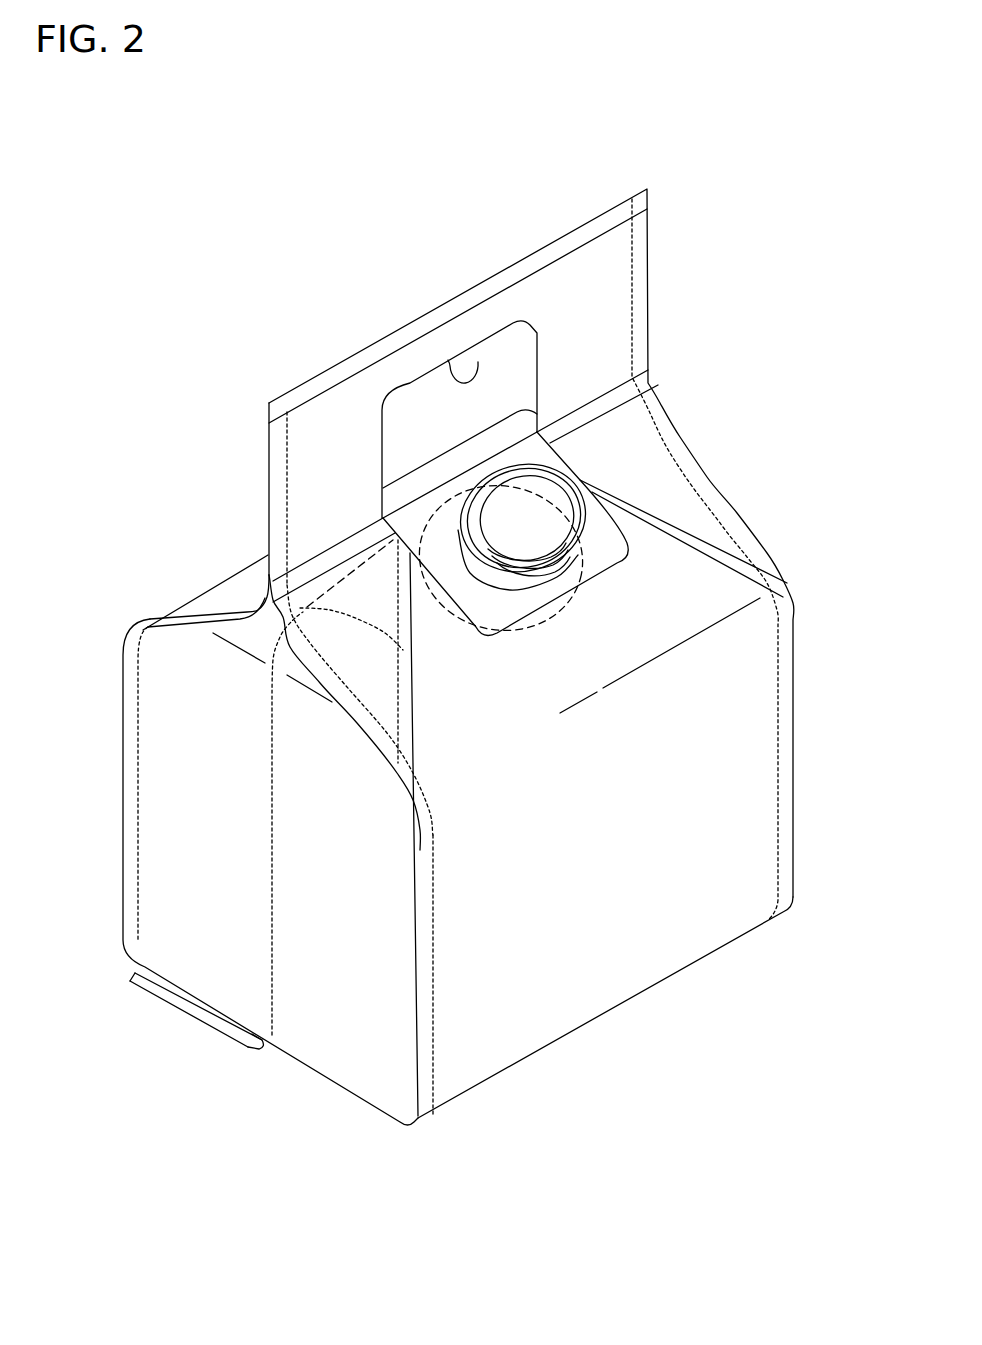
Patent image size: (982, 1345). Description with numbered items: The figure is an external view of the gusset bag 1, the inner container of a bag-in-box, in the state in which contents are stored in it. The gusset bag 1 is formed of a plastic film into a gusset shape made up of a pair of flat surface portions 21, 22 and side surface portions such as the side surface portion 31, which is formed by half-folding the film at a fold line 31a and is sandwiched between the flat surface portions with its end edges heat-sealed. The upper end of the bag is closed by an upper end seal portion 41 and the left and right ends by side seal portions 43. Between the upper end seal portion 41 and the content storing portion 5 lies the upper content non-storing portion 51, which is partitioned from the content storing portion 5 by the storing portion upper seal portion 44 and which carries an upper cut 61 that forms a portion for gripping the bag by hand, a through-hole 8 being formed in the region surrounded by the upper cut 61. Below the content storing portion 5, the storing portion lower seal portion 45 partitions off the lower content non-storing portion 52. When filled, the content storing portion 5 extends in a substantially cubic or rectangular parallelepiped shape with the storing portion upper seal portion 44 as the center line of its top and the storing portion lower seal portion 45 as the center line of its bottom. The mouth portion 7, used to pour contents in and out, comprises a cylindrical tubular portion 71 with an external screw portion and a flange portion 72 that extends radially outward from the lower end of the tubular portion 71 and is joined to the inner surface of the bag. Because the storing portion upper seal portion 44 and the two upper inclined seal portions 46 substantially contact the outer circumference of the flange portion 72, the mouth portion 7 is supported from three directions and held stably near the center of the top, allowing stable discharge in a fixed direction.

The gusset bag 1 is at (677, 148).
The content storing portion 5 is at (648, 777).
The mouth portion 7 is at (165, 462).
The through-hole 8 is at (483, 567).
The flat surface portion 21 is at (623, 843).
The flat surface portion 22 is at (215, 713).
The side surface portion 31 is at (345, 970).
The fold line 31a is at (270, 790).
The upper end seal portion 41 is at (553, 250).
The side seal portion 43 is at (787, 813).
The storing portion upper seal portion 44 is at (592, 412).
The storing portion lower seal portion 45 is at (248, 1045).
The upper inclined seal portion 46 is at (300, 608).
The upper content non-storing portion 51 is at (593, 318).
The lower content non-storing portion 52 is at (185, 1008).
The upper cut 61 is at (470, 353).
The tubular portion 71 is at (483, 477).
The flange portion 72 is at (470, 492).